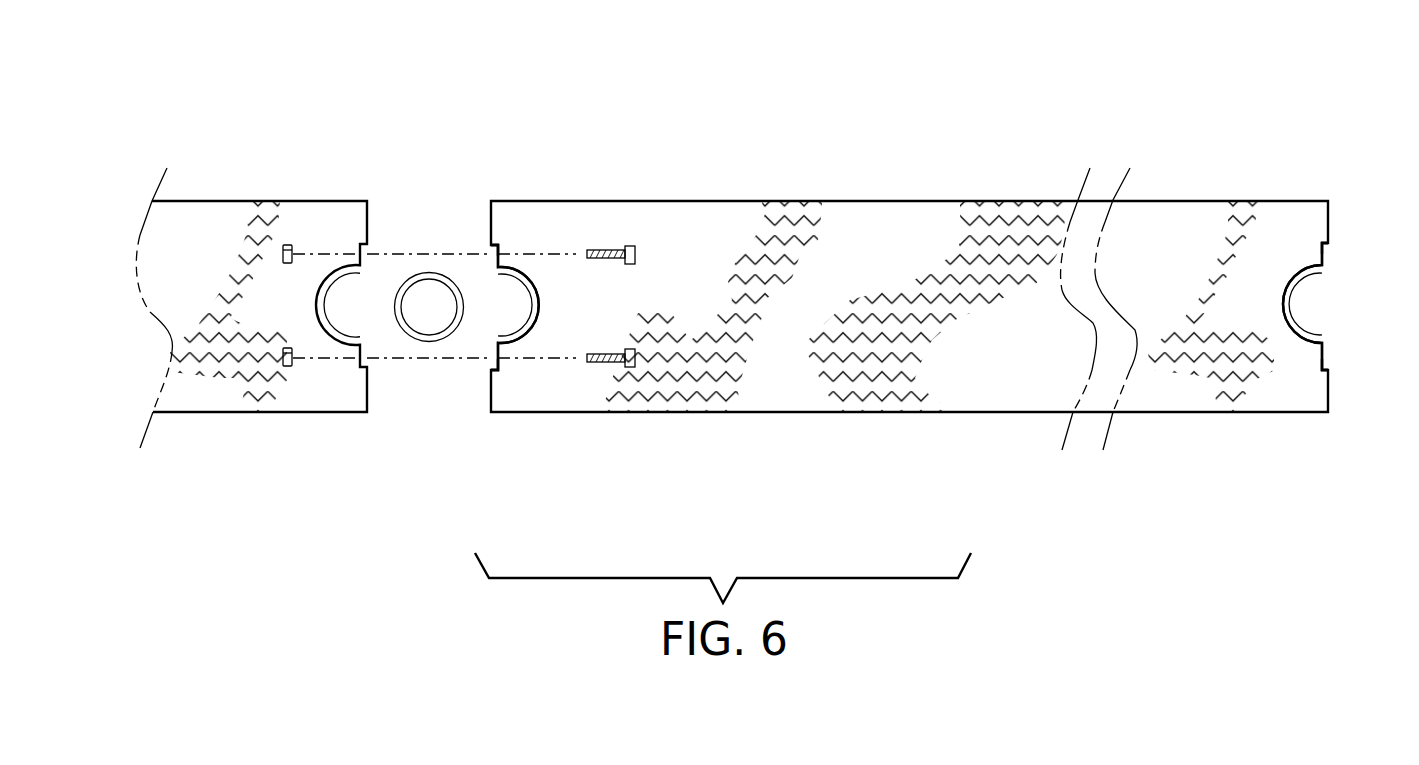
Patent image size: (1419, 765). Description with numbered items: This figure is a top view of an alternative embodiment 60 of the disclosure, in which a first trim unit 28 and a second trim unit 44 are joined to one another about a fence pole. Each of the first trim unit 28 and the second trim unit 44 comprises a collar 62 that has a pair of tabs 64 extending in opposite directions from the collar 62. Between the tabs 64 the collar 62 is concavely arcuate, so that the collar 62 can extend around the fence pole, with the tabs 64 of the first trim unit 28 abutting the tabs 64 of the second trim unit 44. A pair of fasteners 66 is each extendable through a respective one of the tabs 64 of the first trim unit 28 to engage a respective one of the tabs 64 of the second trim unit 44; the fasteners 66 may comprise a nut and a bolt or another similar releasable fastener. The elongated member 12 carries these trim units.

The rail / track member 12 is at (820, 202).
The first trim unit 28 is at (1292, 258).
The second trim unit 44 is at (513, 245).
The alternative embodiment 60 is at (930, 152).
The collar 62 is at (525, 330).
The tabs 64 is at (510, 245).
The fasteners 66 is at (605, 250).